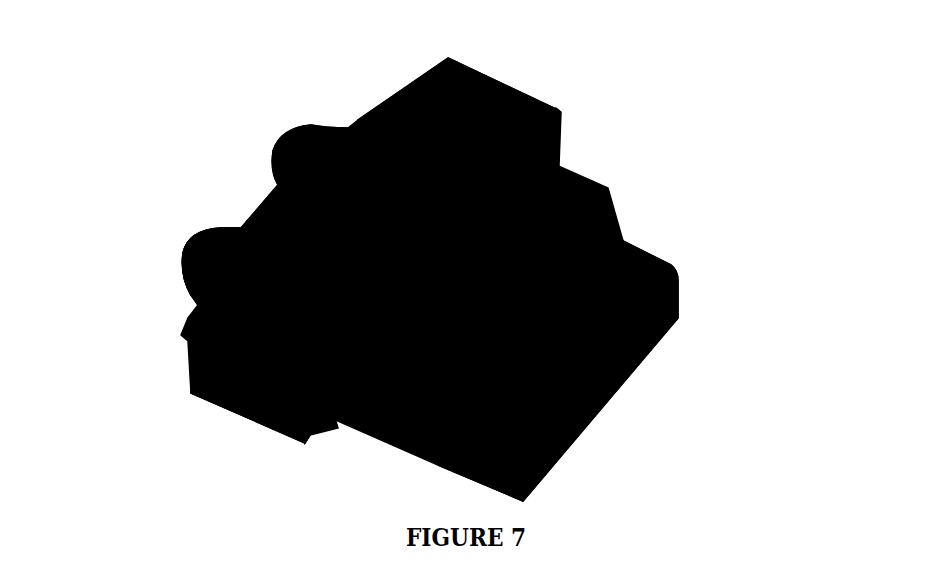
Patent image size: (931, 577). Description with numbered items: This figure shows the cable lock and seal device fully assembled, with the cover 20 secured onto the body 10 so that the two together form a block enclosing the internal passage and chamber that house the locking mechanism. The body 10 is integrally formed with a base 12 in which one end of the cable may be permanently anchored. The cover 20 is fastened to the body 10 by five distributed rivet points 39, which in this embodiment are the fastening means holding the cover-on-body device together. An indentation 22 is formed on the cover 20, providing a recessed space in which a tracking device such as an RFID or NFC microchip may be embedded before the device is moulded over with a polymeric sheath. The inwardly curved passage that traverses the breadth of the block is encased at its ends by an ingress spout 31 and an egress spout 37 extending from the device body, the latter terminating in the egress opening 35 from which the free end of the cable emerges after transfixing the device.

The body portion 10 is at (183, 363).
The base 12 is at (653, 250).
The cover portion 20 is at (182, 311).
The indentation 22 is at (348, 112).
The ingress spout 31 is at (550, 125).
The egress opening 35 is at (220, 402).
The egress spout 37 is at (270, 425).
The rivet points 39 is at (267, 130).